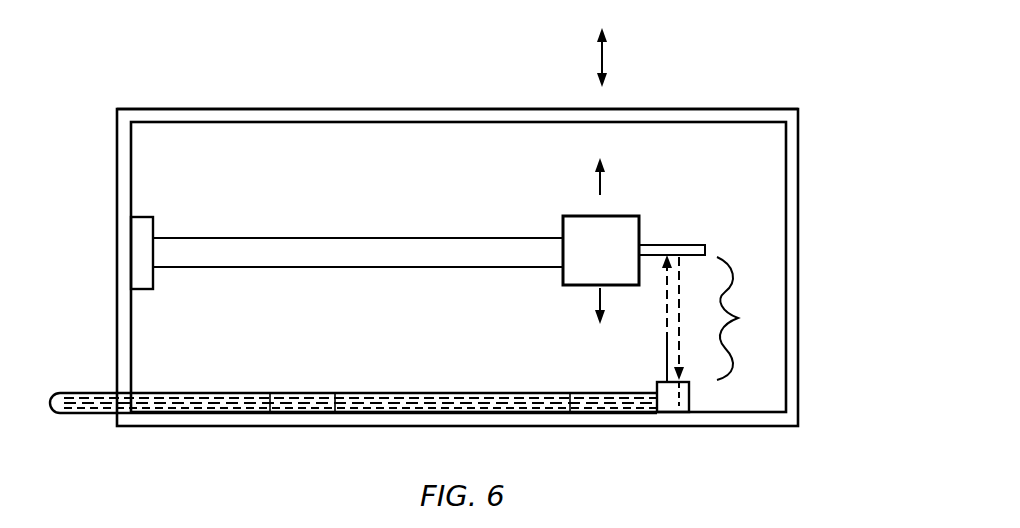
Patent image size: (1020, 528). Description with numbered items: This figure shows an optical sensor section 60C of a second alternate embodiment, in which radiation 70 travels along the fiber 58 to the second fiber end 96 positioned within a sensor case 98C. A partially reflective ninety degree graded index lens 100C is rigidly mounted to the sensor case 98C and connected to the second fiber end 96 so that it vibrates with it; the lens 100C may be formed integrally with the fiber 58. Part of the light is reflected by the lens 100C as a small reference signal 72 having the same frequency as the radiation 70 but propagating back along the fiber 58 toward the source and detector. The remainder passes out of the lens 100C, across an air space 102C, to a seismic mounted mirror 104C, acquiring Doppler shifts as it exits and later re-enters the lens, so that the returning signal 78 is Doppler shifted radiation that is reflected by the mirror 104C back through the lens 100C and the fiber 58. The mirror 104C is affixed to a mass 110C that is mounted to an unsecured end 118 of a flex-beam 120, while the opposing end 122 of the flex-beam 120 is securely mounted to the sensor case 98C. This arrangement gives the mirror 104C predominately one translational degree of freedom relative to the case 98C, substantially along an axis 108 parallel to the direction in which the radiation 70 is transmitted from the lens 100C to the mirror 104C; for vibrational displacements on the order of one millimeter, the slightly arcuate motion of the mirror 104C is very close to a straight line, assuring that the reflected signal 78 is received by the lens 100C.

The optical sensor section 60C is at (202, 103).
The sensor case 98C is at (712, 108).
The partially reflective 90 degree graded index (GRIN) lens 100C is at (689, 398).
The axis 108 is at (601, 56).
The opposing end of the flex-beam 122 is at (153, 217).
The flex-beam 120 is at (280, 238).
The mass 110C is at (578, 216).
The unsecured end of the flex-beam 118 is at (640, 240).
The seismic mounted mirror 104C is at (705, 250).
The air space 102C is at (738, 318).
The second fiber end 96 is at (657, 392).
The fiber 58 is at (341, 383).
The signal 72 is at (255, 393).
The radiation 70 is at (185, 402).
The Doppler shifted radiation 78 is at (305, 403).